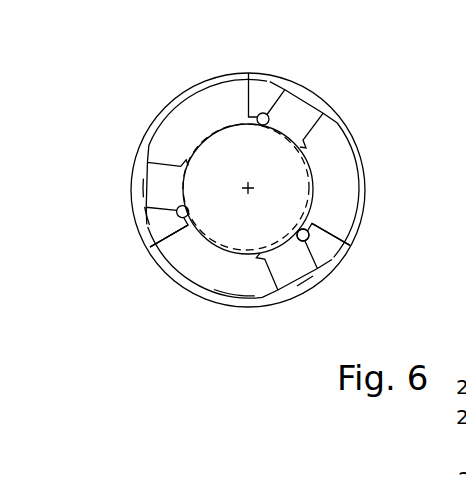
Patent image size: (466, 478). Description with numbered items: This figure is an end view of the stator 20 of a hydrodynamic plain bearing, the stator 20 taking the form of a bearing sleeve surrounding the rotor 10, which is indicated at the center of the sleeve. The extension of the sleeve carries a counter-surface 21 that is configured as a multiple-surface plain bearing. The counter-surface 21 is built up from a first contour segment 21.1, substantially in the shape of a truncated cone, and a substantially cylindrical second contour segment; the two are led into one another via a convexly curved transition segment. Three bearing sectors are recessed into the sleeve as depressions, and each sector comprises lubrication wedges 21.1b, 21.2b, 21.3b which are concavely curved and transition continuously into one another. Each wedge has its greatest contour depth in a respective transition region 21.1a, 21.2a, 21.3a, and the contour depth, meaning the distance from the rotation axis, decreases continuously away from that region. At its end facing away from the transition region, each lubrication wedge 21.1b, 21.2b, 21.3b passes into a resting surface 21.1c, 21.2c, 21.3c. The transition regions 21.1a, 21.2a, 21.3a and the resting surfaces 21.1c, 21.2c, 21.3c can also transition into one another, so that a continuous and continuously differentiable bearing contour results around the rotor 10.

The rotor 10 is at (233, 122).
The stator 20 is at (127, 266).
The counter-surface 21 is at (180, 304).
The contour segment 21.1 is at (231, 302).
The transition region 21.1a is at (150, 223).
The lubrication wedge 21.1b is at (254, 292).
The resting surface 21.1c is at (155, 191).
The transition region 21.2a is at (193, 212).
The lubrication wedge 21.2b is at (300, 237).
The resting surface 21.2c is at (310, 217).
The transition region 21.3a is at (187, 224).
The lubrication wedge 21.3b is at (195, 236).
The resting surface 21.3c is at (305, 243).